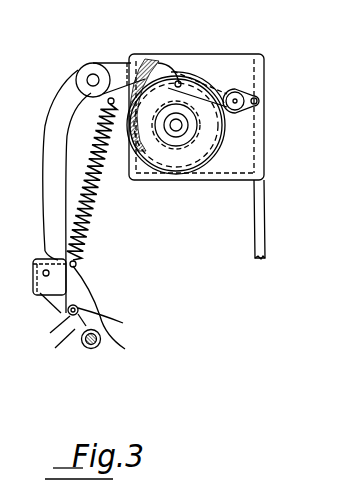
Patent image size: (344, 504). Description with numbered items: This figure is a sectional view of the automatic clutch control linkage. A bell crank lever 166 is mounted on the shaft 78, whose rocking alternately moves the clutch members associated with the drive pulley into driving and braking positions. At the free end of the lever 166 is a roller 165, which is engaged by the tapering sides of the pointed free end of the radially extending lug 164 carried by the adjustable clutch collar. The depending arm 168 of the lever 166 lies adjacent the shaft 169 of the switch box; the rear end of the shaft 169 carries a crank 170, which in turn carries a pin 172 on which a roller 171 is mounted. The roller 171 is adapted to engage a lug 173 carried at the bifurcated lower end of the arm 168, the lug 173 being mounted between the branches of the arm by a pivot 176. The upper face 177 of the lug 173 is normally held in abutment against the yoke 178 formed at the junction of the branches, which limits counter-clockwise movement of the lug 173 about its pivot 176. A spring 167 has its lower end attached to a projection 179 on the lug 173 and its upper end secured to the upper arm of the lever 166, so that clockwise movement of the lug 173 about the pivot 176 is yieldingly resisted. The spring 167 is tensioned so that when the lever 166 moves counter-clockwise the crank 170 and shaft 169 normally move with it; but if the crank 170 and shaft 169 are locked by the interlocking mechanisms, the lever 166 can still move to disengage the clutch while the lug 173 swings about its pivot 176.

The shaft 78 is at (81, 71).
The bell crank lever 166 is at (110, 64).
The roller 165 is at (173, 71).
The radially extending lug 164 is at (178, 83).
The depending arm 168 is at (36, 176).
The spring 167 is at (87, 200).
The yoke 178 is at (45, 245).
The upper face 177 is at (39, 252).
The pivot 176 is at (36, 265).
The lug 173 is at (37, 286).
The roller 171 is at (42, 325).
The crank 170 is at (47, 340).
The shaft 169 is at (78, 341).
The pin 172 is at (117, 341).
The projection 179 is at (115, 315).